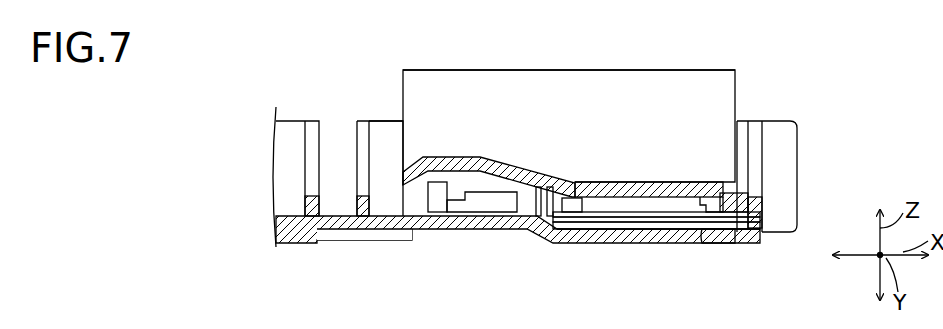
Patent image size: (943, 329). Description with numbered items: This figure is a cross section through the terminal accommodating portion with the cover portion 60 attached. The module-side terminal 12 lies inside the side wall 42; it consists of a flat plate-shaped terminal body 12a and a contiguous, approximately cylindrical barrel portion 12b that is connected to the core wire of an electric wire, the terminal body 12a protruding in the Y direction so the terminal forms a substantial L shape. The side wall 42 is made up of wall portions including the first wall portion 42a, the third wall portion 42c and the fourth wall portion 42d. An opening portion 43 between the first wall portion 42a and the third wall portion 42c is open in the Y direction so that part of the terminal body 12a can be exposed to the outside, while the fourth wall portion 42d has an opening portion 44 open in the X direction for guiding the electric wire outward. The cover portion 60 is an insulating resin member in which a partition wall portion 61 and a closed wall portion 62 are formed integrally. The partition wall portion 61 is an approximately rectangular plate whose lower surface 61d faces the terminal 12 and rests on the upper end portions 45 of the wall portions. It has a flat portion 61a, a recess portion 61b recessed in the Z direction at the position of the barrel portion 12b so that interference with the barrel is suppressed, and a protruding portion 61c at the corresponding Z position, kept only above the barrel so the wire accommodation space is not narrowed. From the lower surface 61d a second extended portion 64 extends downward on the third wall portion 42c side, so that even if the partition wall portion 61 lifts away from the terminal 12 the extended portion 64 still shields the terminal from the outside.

The module-side terminal 12 is at (612, 235).
The terminal body 12a is at (657, 222).
The barrel portion 12b is at (458, 214).
The side wall 42 is at (393, 122).
The first wall portion 42a is at (385, 119).
The third wall portion 42c is at (723, 193).
The fourth wall portion 42d is at (357, 153).
The opening portion 43 is at (575, 224).
The opening portion 44 is at (362, 120).
The upper end portions 45 is at (737, 186).
The cover portion 60 is at (645, 70).
The partition wall portion 61 is at (713, 182).
The flat portion 61a is at (656, 182).
The recess portion 61b is at (436, 176).
The protruding portion 61c is at (461, 157).
The lower surface 61d is at (598, 203).
The closed wall portion 62 is at (549, 70).
The second extended portion 64 is at (705, 231).